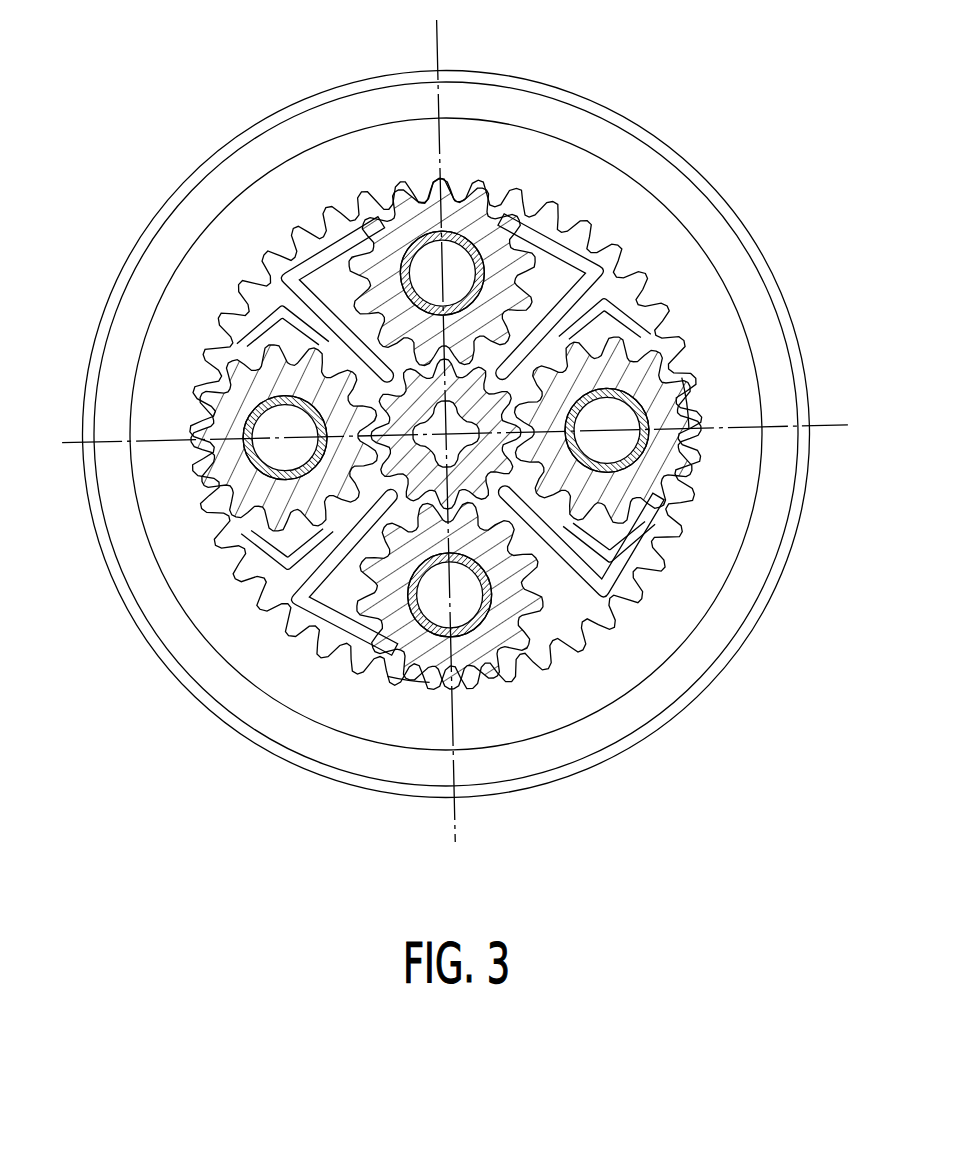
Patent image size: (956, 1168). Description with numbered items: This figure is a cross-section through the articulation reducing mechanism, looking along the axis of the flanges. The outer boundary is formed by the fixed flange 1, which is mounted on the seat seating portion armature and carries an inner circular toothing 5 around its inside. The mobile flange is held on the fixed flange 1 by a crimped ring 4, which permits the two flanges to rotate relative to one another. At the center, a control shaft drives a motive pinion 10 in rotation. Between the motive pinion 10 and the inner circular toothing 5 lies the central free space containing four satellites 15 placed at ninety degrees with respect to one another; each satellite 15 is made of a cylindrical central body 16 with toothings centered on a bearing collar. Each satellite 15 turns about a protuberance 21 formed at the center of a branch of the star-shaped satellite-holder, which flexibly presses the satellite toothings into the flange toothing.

The fixed flange 1 is at (720, 333).
The crimped ring 4 is at (553, 88).
The inner circular toothing 5 is at (668, 325).
The motive pinion 10 is at (505, 375).
The satellites 15 is at (477, 183).
The cylindrical central body 16 is at (393, 677).
The protuberance 21 is at (687, 407).